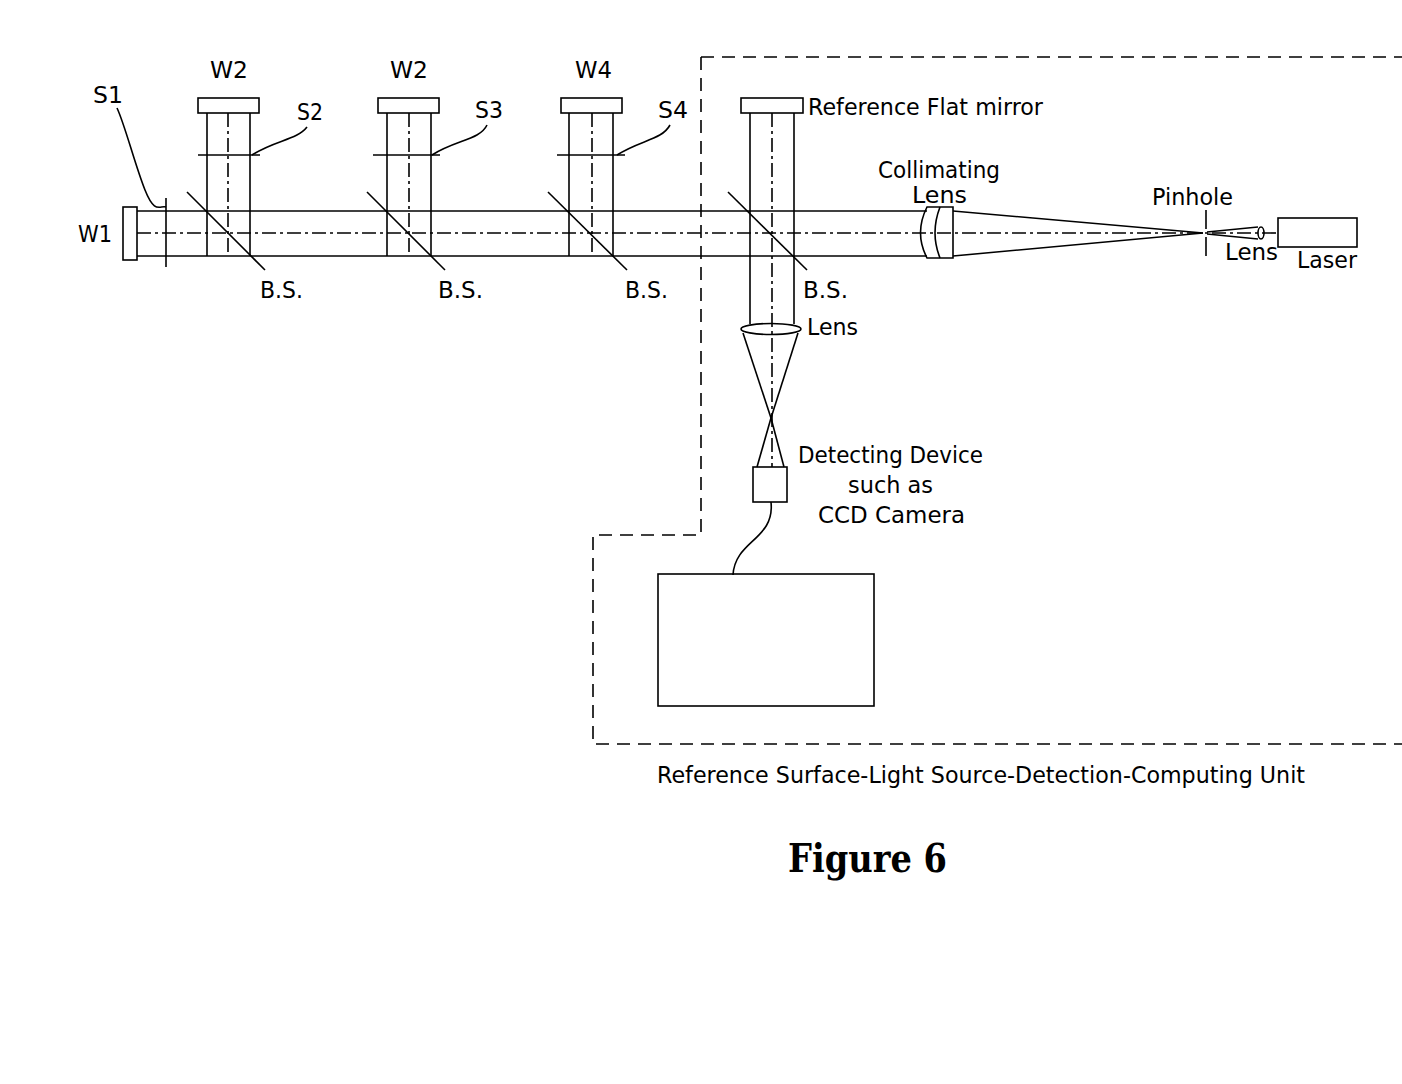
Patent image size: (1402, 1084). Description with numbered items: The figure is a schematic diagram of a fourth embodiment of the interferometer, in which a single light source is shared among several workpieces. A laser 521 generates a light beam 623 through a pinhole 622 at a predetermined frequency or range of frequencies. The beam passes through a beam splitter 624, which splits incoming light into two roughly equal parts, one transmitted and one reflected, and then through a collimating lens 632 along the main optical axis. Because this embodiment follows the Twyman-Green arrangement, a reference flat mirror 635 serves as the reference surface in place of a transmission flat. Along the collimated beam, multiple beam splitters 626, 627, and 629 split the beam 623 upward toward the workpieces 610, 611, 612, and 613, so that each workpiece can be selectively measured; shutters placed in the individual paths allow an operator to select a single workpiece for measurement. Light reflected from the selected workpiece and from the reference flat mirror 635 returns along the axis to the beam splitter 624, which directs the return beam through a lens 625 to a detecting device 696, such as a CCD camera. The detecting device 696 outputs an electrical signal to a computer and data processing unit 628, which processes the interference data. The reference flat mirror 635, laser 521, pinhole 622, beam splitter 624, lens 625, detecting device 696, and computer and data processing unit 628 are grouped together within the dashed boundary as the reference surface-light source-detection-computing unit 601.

The workpiece 610 is at (132, 260).
The workpiece 611 is at (237, 97).
The workpiece 612 is at (418, 97).
The workpiece 613 is at (602, 97).
The beam splitter 626 is at (260, 270).
The beam splitter 627 is at (442, 272).
The beam splitter 629 is at (627, 272).
The beam splitter 624 is at (807, 270).
The reference flat mirror 635 is at (783, 97).
The collimating lens 632 is at (943, 260).
The pinhole 622 is at (1206, 256).
The light beam 623 is at (1240, 227).
The laser 521 is at (1347, 217).
The lens 625 is at (797, 330).
The detecting device 696 is at (788, 488).
The computer and data processing unit 628 is at (766, 640).
The reference surface-light source-detection-computing unit 601 is at (1230, 666).